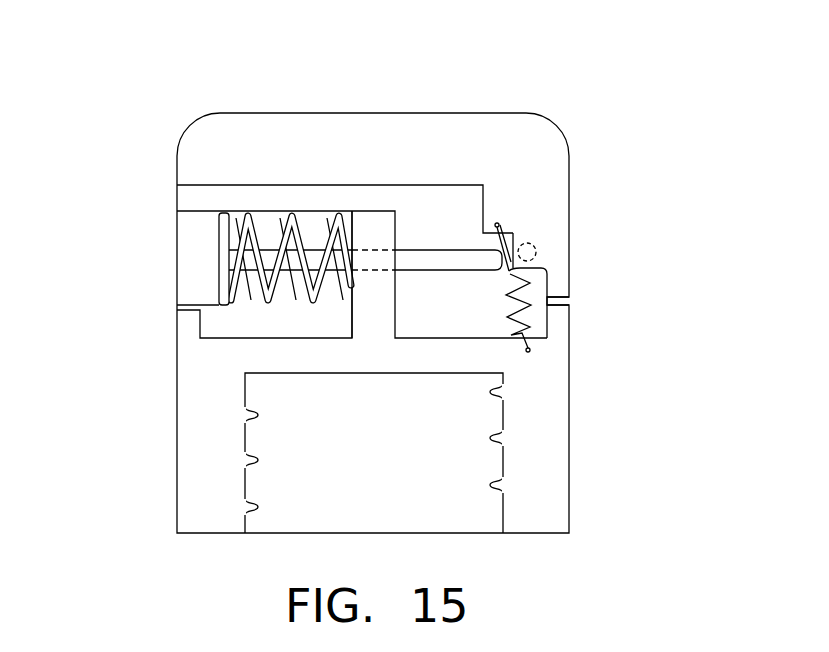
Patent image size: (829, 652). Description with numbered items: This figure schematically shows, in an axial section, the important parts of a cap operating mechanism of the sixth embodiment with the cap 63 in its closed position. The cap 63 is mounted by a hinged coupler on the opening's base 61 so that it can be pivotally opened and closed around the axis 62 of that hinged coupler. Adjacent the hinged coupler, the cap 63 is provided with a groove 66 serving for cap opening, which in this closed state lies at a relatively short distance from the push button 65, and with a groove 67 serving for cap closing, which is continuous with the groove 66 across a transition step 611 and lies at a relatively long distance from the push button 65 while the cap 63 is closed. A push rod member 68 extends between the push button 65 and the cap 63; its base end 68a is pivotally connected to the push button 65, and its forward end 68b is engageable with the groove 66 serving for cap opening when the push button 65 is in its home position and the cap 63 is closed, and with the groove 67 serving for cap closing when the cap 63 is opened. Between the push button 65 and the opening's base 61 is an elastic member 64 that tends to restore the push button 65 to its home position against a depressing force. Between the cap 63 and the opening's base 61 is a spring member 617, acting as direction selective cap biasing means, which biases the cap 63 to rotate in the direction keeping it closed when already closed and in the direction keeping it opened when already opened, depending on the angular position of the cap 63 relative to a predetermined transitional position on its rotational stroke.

The opening's base 61 is at (552, 432).
The axis of the hinged coupler 62 is at (536, 246).
The cap 63 is at (357, 132).
The elastic member 64 is at (288, 212).
The push button 65 is at (193, 255).
The groove serving for cap opening 66 is at (514, 233).
The groove serving for cap closing 67 is at (548, 322).
The push rod member 68 is at (420, 257).
The base end 68a is at (222, 290).
The forward end 68b is at (484, 188).
The transition step 611 is at (547, 272).
The spring member 617 is at (542, 280).